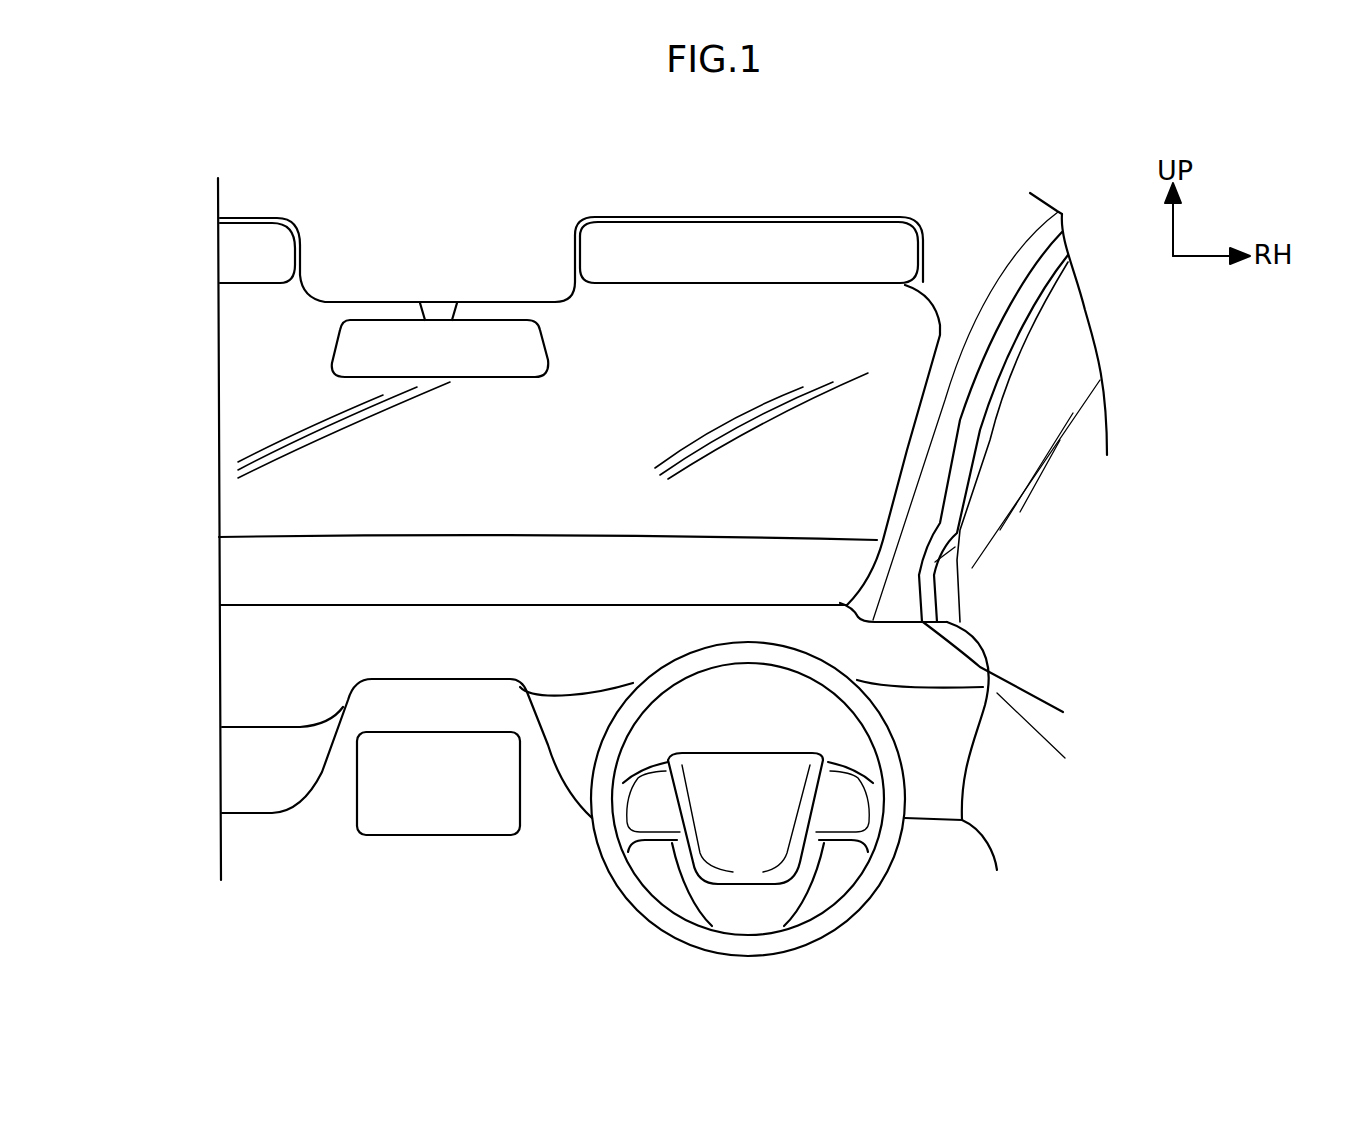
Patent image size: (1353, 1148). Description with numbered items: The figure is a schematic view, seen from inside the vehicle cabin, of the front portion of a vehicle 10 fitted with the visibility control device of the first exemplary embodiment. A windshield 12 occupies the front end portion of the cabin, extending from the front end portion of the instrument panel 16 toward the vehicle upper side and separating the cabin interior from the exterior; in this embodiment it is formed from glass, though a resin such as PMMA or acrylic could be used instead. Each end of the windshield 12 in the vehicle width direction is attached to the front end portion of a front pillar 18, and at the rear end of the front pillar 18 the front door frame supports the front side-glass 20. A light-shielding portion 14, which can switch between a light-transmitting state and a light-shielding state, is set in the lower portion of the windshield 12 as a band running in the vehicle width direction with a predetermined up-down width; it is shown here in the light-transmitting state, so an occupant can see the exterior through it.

The vehicle 10 is at (200, 195).
The windshield 12 is at (235, 348).
The light-shielding portion 14 is at (243, 563).
The instrument panel 16 is at (263, 692).
The front pillar 18 is at (1010, 297).
The front side-glass 20 is at (1080, 432).